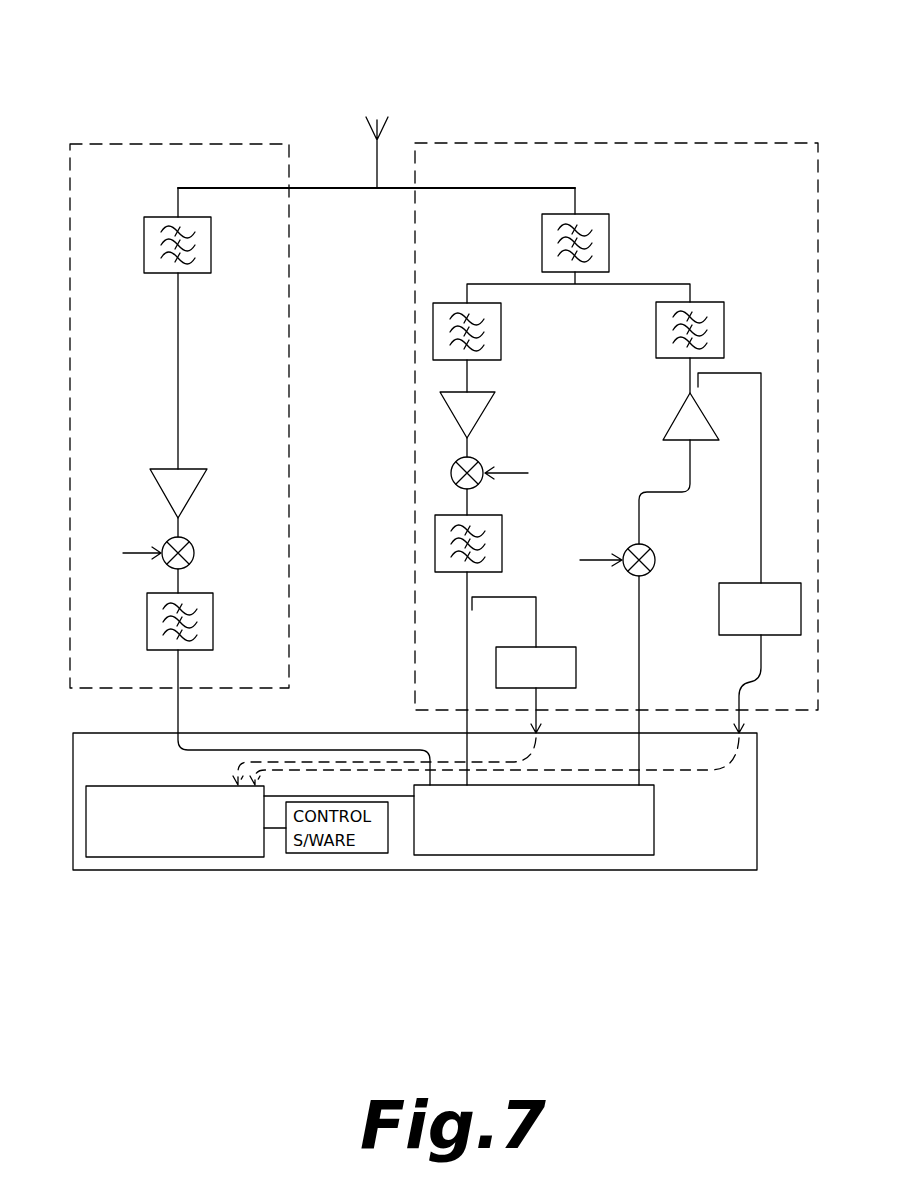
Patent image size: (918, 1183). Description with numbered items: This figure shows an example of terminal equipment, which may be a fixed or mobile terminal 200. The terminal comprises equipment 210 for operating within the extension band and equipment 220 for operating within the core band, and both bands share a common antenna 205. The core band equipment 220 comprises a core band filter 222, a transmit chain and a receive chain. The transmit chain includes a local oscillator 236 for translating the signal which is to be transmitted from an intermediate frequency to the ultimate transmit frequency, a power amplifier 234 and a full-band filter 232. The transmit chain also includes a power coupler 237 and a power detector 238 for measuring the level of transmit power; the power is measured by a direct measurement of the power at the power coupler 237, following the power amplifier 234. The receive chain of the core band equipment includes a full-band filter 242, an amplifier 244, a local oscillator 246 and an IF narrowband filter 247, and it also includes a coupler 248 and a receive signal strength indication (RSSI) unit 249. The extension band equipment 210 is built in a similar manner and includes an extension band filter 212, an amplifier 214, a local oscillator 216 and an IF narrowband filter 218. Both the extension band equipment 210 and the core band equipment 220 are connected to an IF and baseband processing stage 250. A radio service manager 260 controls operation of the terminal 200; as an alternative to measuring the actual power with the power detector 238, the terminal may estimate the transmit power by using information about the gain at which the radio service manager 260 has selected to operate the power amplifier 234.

The terminal 200 is at (47, 85).
The common antenna 205 is at (374, 162).
The extension band equipment 210 is at (179, 398).
The extension band filter 212 is at (212, 248).
The amplifier 214 is at (190, 470).
The local oscillator 216 is at (190, 545).
The IF narrowband filter 218 is at (214, 630).
The core band equipment 220 is at (616, 408).
The core band filter 222 is at (610, 252).
The full-band filter 232 is at (725, 347).
The power amplifier 234 is at (686, 405).
The local oscillator 236 is at (650, 548).
The power coupler 237 is at (703, 383).
The power detector 238 is at (719, 622).
The full-band filter 242 is at (502, 347).
The amplifier 244 is at (493, 392).
The local oscillator 246 is at (480, 462).
The IF narrowband filter 247 is at (503, 545).
The coupler 248 is at (477, 594).
The receive signal strength indication (RSSI) unit 249 is at (552, 645).
The IF and baseband processing stage 250 is at (534, 820).
The radio service manager 260 is at (175, 821).